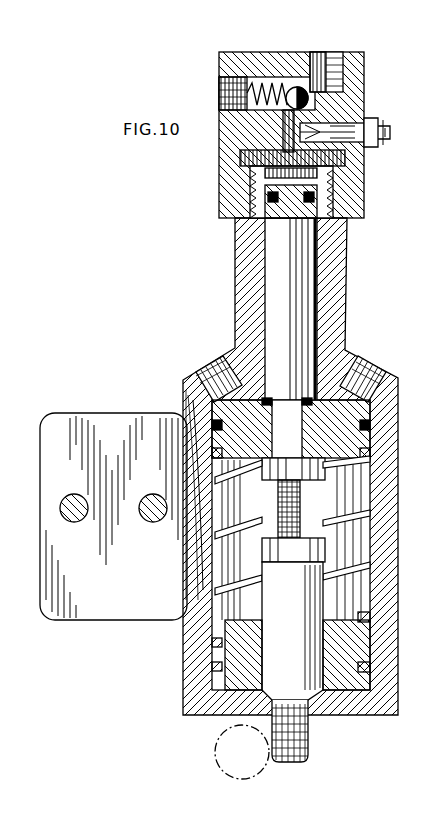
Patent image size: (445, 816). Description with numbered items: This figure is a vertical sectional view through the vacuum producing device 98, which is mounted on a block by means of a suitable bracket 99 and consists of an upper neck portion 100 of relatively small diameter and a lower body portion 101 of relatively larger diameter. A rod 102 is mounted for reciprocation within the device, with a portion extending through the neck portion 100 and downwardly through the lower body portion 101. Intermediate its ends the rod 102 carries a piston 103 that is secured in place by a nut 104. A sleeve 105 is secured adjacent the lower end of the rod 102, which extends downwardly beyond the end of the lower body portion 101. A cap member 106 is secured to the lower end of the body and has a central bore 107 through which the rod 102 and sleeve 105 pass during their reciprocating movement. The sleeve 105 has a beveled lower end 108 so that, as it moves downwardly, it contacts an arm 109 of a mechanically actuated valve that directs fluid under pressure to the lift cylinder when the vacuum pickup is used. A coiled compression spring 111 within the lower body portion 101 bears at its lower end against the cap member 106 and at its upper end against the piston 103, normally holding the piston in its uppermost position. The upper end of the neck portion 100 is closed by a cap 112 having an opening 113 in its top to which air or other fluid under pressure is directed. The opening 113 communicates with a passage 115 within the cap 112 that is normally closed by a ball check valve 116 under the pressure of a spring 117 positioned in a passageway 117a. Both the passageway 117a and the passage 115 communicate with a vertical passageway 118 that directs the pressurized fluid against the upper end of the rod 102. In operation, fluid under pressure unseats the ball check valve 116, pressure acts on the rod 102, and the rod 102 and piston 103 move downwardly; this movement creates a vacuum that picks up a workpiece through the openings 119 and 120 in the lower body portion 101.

The vacuum producing device 98 is at (371, 321).
The bracket 99 is at (118, 627).
The upper neck portion 100 is at (343, 256).
The lower body portion 101 is at (392, 528).
The rod 102 is at (346, 350).
The piston 103 is at (372, 412).
The nut 104 is at (340, 466).
The sleeve 105 is at (330, 594).
The cap member 106 is at (358, 714).
The central bore 107 is at (318, 713).
The beveled lower end 108 is at (268, 700).
The arm 109 is at (215, 763).
The coiled compression spring 111 is at (355, 503).
The cap 112 is at (358, 192).
The opening 113 is at (338, 55).
The passage 115 is at (345, 96).
The ball check valve 116 is at (295, 86).
The spring 117 is at (260, 85).
The passageway 117a is at (222, 95).
The vertical passageway 118 is at (282, 134).
The opening 119 is at (376, 367).
The opening 120 is at (216, 368).